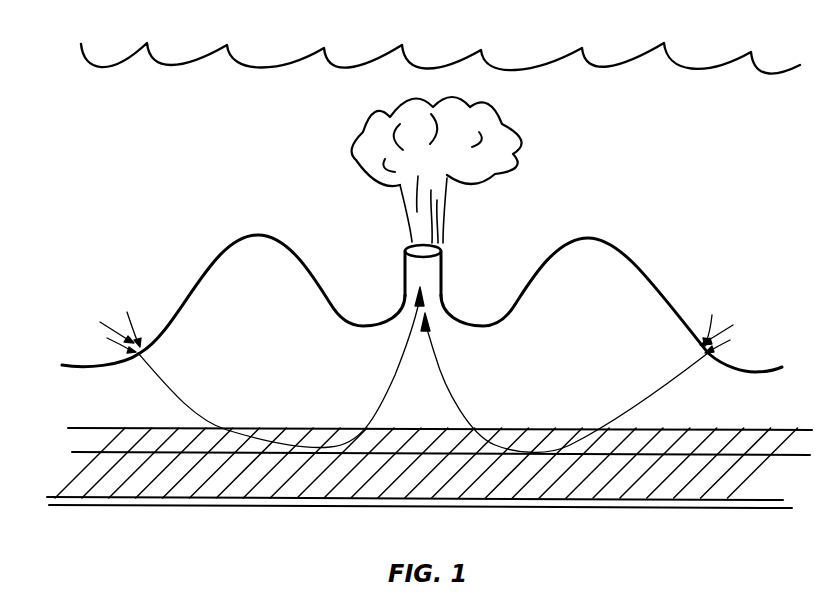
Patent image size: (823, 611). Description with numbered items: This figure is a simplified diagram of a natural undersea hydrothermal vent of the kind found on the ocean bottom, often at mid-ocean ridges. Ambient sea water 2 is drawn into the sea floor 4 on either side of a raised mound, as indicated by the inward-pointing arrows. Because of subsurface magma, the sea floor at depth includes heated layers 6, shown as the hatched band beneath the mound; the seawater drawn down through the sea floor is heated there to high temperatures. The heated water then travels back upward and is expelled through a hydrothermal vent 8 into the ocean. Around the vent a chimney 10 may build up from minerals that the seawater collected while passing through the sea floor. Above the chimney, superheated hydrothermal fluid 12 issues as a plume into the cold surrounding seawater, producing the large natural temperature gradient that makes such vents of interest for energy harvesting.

The ambient sea water 2 is at (111, 311).
The sea floor 4 is at (772, 367).
The heated layers 6 is at (670, 429).
The hydrothermal vent 8 is at (411, 241).
The chimney 10 is at (443, 268).
The superheated hydrothermal fluid 12 is at (435, 213).